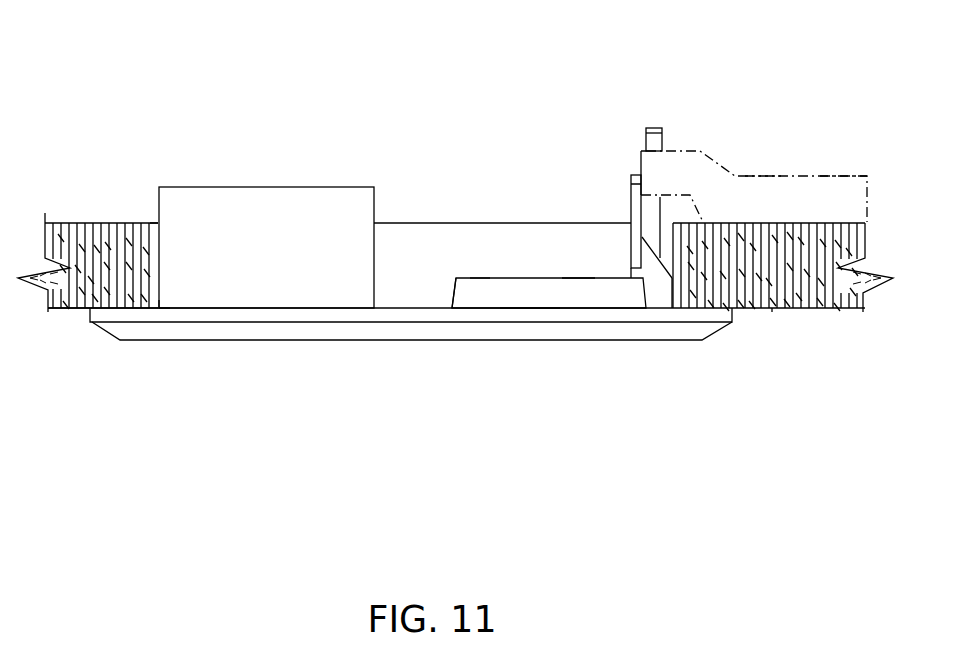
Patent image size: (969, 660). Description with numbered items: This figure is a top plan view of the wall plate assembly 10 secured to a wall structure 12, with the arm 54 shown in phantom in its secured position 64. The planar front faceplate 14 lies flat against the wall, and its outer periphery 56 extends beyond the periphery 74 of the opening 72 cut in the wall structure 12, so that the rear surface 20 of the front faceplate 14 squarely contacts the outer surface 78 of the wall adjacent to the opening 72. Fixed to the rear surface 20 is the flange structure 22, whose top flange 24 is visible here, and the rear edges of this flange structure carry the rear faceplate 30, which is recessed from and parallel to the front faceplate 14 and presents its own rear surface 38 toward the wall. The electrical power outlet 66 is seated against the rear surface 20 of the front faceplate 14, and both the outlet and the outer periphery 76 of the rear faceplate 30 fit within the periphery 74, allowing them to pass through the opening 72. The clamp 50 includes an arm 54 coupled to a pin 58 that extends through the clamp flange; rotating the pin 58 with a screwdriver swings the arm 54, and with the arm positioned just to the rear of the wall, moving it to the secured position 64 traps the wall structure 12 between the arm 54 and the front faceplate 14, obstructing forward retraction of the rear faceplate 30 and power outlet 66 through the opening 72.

The wall plate assembly 10 is at (472, 237).
The wall structure 12 is at (837, 330).
The front faceplate 14 is at (372, 342).
The rear surface 20 is at (181, 308).
The flange structure 22 is at (525, 296).
The top flange 24 is at (577, 293).
The rear faceplate 30 is at (547, 262).
The rear surface 38 is at (478, 276).
The clamp 50 is at (745, 146).
The arm 54 is at (763, 177).
The outer periphery 56 is at (88, 320).
The pin 58 is at (651, 126).
The secured position 64 is at (831, 177).
The electrical power outlet 66 is at (278, 250).
The opening 72 is at (586, 240).
The periphery 74 is at (152, 225).
The outer periphery 76 is at (453, 278).
The outer surface 78 is at (772, 312).